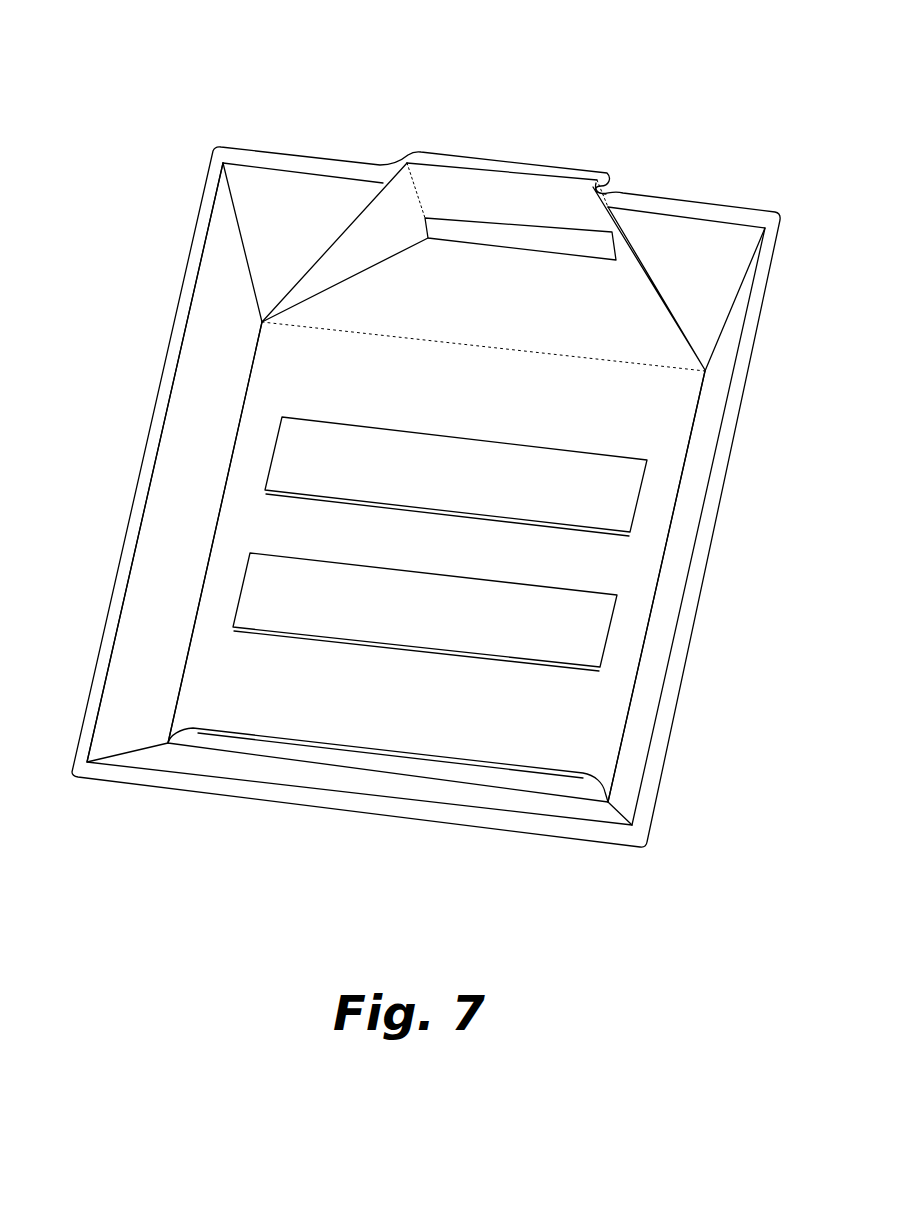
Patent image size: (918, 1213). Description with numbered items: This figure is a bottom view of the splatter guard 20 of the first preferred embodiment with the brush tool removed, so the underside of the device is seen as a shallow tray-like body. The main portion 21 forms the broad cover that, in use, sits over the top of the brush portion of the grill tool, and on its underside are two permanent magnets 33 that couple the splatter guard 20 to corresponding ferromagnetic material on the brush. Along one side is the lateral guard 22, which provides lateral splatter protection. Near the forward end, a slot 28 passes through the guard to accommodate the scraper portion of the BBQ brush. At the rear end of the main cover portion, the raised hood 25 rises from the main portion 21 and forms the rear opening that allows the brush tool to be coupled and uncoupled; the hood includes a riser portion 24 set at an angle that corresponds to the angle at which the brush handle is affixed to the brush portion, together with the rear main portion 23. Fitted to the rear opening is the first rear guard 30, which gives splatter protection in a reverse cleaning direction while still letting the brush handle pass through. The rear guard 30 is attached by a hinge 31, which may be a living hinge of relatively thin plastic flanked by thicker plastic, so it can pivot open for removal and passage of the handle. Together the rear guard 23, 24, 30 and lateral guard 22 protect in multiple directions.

The splatter guard 20 is at (123, 86).
The main portion 21 is at (410, 723).
The lateral guard 22 is at (183, 495).
The rear main portion 23 is at (307, 217).
The riser portion 24 is at (407, 207).
The raised hood 25 is at (593, 330).
The slot 28 is at (245, 748).
The rear guard 30 is at (490, 190).
The hinge 31 is at (605, 182).
The permanent magnets 33 is at (600, 495).